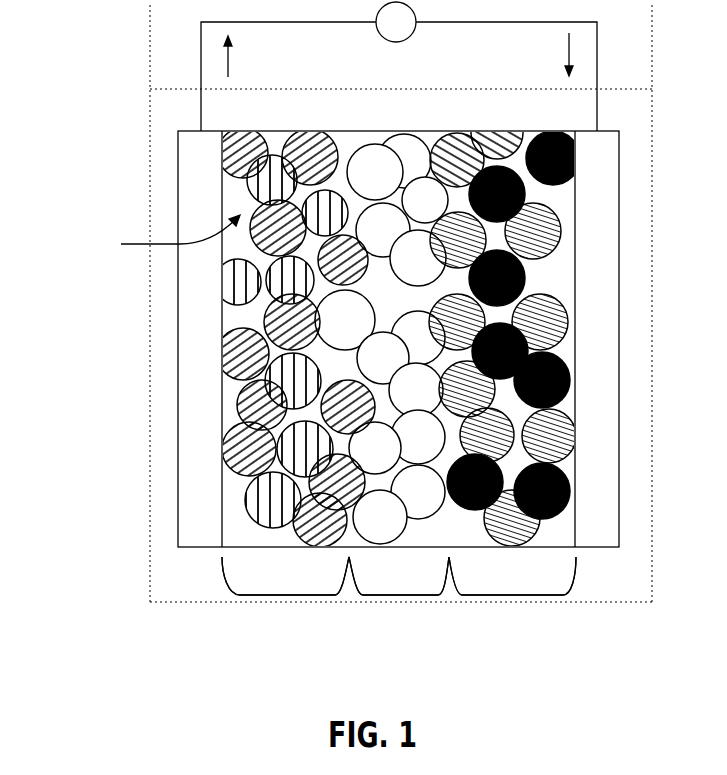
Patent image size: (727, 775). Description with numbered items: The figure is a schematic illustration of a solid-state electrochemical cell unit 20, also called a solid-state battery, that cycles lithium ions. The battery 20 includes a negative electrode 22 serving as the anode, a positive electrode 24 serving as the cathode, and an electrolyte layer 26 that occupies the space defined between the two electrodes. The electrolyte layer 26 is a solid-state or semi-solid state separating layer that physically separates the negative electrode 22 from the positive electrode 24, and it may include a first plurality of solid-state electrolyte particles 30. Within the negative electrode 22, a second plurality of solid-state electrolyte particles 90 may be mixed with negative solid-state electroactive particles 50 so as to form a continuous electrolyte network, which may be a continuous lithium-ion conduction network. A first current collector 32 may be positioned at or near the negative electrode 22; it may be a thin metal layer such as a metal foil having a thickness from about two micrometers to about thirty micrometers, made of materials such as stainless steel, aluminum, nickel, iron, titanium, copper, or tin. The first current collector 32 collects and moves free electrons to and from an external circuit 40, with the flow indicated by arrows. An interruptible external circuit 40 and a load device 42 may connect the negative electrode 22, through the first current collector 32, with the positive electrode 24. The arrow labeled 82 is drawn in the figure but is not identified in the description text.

The solid-state electrochemical cell unit 20 is at (337, 380).
The negative electrode 22 is at (285, 595).
The positive electrode 24 is at (513, 595).
The electrolyte layer 26 is at (400, 595).
The first plurality of solid-state electrolyte particles 30 is at (336, 323).
The first current collector 32 is at (177, 505).
The external circuit 40 is at (325, 66).
The load device 42 is at (396, 22).
The negative solid-state electroactive particles 50 is at (232, 146).
The flow direction 82 is at (169, 234).
The second plurality of solid-state electrolyte particles 90 is at (176, 282).